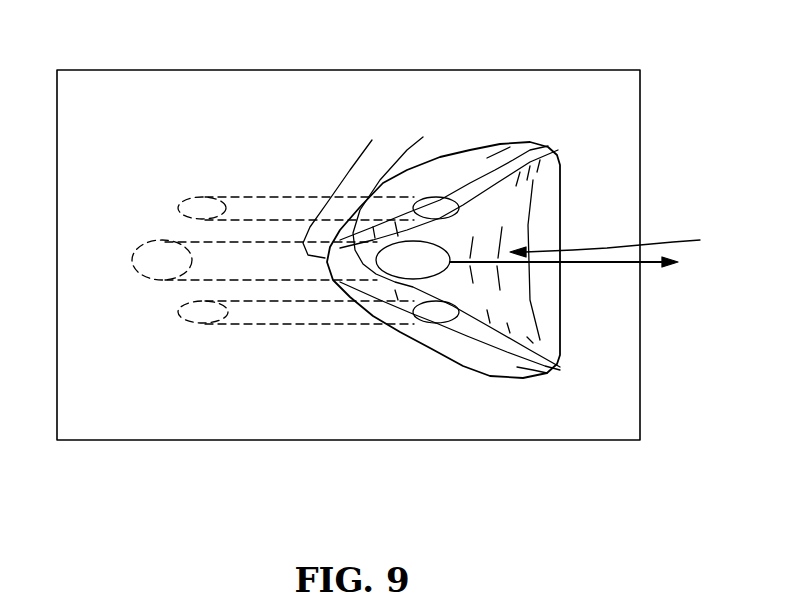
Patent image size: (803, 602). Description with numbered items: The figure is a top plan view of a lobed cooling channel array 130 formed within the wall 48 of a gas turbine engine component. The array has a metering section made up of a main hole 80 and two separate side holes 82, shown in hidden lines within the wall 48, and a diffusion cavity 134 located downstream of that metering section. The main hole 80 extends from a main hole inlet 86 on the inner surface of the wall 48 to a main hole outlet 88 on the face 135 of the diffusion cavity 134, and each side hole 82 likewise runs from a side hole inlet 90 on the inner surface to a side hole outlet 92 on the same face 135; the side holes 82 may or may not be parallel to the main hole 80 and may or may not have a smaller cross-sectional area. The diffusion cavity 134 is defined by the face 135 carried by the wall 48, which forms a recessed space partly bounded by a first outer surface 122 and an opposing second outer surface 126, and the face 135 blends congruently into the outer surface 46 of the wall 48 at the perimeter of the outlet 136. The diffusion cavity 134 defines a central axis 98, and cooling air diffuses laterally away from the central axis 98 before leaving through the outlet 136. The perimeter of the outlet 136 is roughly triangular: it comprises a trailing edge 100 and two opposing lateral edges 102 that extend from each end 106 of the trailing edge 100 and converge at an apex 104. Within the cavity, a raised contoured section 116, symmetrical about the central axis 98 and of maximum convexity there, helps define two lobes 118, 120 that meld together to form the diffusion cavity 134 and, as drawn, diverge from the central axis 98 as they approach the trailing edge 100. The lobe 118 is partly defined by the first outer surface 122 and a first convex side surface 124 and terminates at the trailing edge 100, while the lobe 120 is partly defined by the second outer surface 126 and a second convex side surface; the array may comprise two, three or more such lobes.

The outer surface 46 is at (258, 97).
The wall 48 is at (535, 440).
The main hole 80 is at (267, 282).
The side holes 82 is at (275, 196).
The main hole inlet 86 is at (135, 272).
The main hole outlet 88 is at (456, 239).
The side hole inlet 90 is at (195, 193).
The side hole outlet 92 is at (440, 197).
The central axis 98 is at (574, 271).
The trailing edge 100 is at (563, 207).
The lateral edges 102 is at (478, 147).
The apex 104 is at (347, 185).
The end of trailing edge 106 is at (560, 157).
The raised contoured section 116 is at (552, 283).
The first lobe 118 is at (525, 210).
The second lobe 120 is at (517, 310).
The first outer surface 122 is at (490, 162).
The first convex side surface 124 is at (552, 150).
The second outer surface 126 is at (547, 373).
The cooling channel array 130 is at (626, 243).
The diffusion cavity 134 is at (458, 342).
The diffusion cavity face 135 is at (547, 270).
The outlet 136 is at (500, 170).